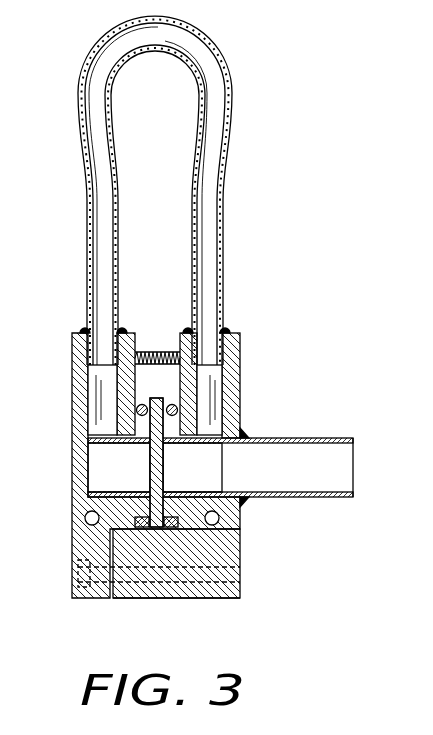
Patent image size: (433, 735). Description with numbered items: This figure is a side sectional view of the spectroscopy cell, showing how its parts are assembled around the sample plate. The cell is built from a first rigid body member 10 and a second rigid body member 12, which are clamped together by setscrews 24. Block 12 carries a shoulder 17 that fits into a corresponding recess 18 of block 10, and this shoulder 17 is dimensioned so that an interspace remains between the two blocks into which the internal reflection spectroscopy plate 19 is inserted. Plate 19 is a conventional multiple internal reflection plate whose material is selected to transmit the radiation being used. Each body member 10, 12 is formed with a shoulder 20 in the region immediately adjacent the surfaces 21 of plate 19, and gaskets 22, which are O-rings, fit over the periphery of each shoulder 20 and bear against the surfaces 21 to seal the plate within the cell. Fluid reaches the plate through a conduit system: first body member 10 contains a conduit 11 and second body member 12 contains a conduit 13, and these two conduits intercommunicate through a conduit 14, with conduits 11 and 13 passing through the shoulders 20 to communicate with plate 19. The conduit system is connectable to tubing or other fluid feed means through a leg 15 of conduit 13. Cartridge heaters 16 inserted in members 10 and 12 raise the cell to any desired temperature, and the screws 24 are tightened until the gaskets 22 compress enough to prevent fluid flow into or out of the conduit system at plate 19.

The first rigid body member 10 is at (72, 538).
The conduit 11 is at (100, 470).
The second rigid body member 12 is at (240, 540).
The conduit 13 is at (206, 432).
The conduit 14 is at (224, 178).
The leg 15 is at (318, 462).
The cartridge heaters 16 is at (85, 517).
The shoulder 17 is at (137, 590).
The recess 18 is at (112, 532).
The internal reflection spectroscopy plate 19 is at (158, 432).
The shoulder 20 is at (140, 436).
The surfaces 21 is at (90, 450).
The gaskets 22 is at (172, 404).
The setscrews 24 is at (151, 350).